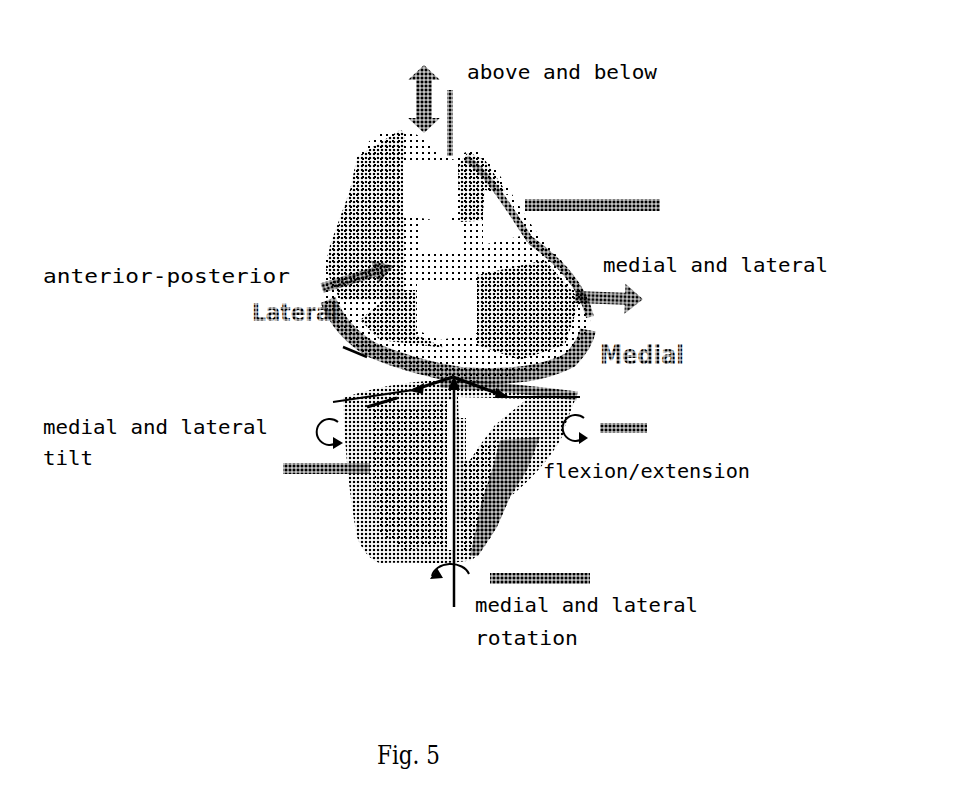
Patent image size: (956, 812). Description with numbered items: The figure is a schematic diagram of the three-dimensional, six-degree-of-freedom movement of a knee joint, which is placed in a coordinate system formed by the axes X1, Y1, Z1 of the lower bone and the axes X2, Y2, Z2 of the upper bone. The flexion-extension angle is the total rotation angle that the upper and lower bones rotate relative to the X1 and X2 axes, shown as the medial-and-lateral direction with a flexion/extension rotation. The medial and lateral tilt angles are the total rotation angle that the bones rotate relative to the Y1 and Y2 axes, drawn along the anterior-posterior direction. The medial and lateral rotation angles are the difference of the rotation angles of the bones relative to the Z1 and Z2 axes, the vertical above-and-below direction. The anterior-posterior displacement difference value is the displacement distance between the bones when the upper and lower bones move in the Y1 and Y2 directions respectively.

The Z2 axis Z2 is at (453, 187).
The Y2 axis Y2 is at (420, 273).
The X2 axis X2 is at (525, 277).
The X1 axis X1 is at (580, 397).
The Y1 axis Y1 is at (397, 400).
The Z1 axis Z1 is at (457, 520).